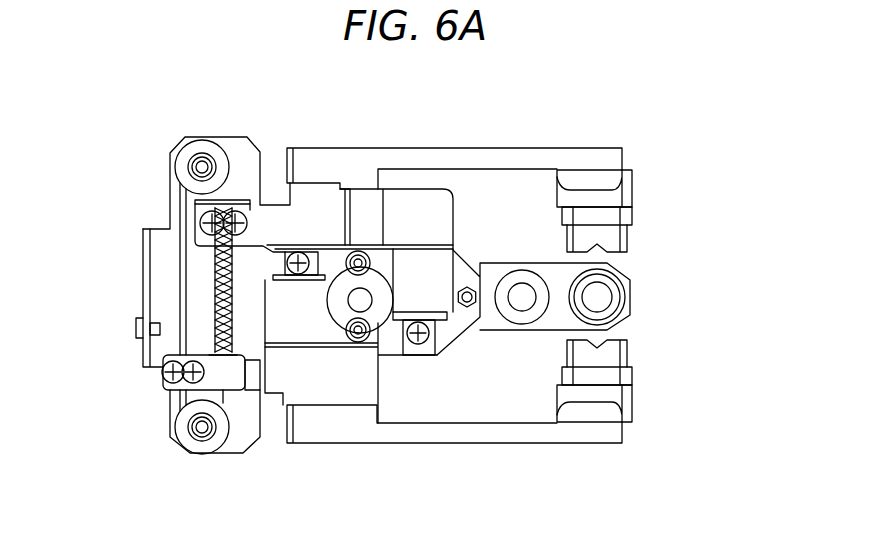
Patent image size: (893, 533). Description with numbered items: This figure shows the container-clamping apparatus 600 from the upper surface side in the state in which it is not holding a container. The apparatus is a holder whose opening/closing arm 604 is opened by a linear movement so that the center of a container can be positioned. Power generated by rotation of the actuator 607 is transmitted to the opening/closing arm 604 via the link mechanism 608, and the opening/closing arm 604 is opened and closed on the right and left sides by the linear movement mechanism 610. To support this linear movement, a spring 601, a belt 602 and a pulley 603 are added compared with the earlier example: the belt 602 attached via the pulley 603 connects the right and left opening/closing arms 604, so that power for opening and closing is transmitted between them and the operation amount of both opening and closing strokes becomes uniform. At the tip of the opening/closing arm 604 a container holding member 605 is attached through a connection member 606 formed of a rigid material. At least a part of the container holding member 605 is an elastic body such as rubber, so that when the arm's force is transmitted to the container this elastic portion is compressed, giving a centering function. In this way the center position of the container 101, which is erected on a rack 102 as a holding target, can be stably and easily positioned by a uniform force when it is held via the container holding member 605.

The container-clamping apparatus 600 is at (158, 132).
The spring 601 is at (143, 231).
The belt 602 is at (138, 308).
The pulley 603 is at (190, 437).
The opening/closing arm 604 is at (507, 160).
The container holding member 605 is at (627, 238).
The connection member 606 is at (635, 190).
The actuator 607 is at (338, 272).
The link mechanism 608 is at (358, 252).
The linear movement mechanism 610 is at (296, 272).
The container 101 is at (633, 275).
The rack 102 is at (632, 302).